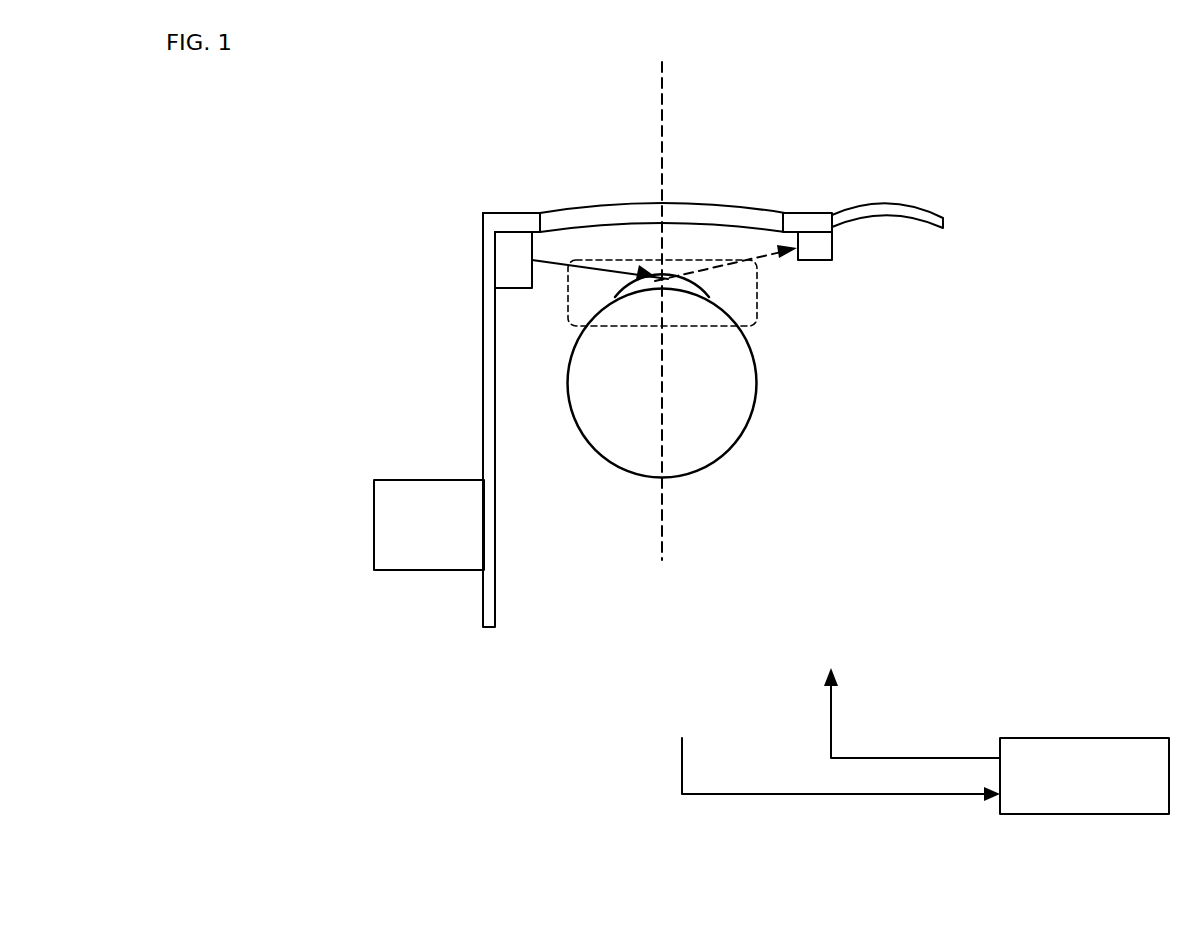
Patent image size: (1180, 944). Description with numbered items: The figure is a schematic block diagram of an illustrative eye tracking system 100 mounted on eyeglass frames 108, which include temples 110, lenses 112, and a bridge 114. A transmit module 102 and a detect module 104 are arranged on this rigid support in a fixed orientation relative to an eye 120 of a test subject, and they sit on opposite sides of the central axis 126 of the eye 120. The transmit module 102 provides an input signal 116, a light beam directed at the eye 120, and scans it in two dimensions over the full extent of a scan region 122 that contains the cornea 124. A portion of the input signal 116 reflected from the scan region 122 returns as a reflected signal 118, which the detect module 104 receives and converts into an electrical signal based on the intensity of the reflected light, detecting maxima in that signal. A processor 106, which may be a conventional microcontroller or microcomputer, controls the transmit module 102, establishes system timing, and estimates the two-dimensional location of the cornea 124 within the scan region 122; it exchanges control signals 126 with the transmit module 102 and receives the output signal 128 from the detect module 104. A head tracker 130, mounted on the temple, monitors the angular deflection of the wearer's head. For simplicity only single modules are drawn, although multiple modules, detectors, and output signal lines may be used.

The system 100 is at (428, 113).
The transmit module 102 is at (512, 279).
The detect module 104 is at (822, 247).
The processor 106 is at (1058, 814).
The eyeglass frames 108 is at (375, 440).
The temples 110 is at (480, 402).
The lenses 112 is at (560, 212).
The bridge 114 is at (925, 213).
The input signal 116 is at (550, 262).
The reflected signal 118 is at (757, 255).
The eye 120 is at (699, 395).
The scan region 122 is at (718, 327).
The cornea 124 is at (683, 279).
The central axis 126 is at (743, 842).
The output signal 128 is at (930, 758).
The head tracker 130 is at (429, 525).